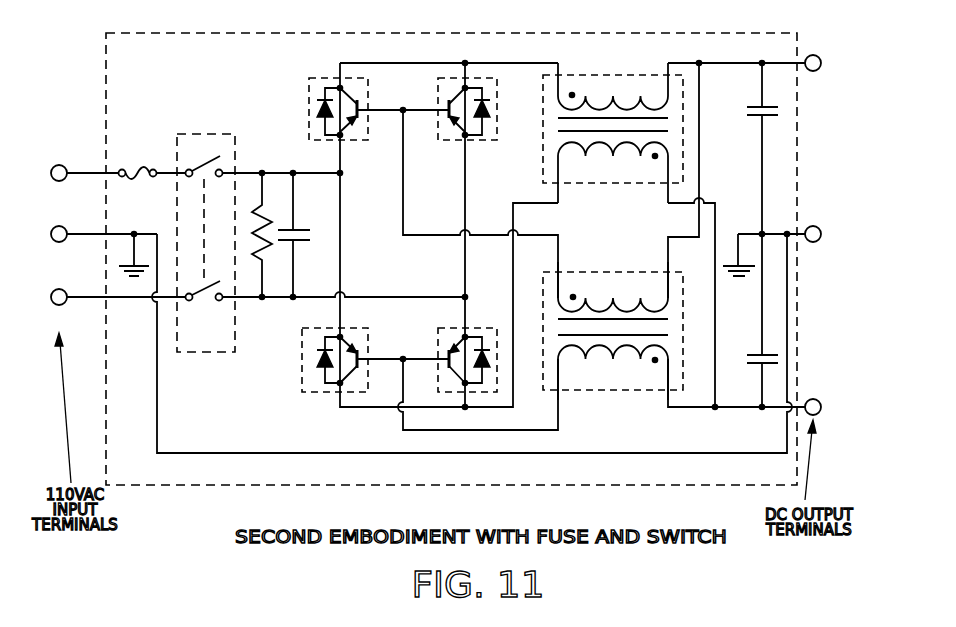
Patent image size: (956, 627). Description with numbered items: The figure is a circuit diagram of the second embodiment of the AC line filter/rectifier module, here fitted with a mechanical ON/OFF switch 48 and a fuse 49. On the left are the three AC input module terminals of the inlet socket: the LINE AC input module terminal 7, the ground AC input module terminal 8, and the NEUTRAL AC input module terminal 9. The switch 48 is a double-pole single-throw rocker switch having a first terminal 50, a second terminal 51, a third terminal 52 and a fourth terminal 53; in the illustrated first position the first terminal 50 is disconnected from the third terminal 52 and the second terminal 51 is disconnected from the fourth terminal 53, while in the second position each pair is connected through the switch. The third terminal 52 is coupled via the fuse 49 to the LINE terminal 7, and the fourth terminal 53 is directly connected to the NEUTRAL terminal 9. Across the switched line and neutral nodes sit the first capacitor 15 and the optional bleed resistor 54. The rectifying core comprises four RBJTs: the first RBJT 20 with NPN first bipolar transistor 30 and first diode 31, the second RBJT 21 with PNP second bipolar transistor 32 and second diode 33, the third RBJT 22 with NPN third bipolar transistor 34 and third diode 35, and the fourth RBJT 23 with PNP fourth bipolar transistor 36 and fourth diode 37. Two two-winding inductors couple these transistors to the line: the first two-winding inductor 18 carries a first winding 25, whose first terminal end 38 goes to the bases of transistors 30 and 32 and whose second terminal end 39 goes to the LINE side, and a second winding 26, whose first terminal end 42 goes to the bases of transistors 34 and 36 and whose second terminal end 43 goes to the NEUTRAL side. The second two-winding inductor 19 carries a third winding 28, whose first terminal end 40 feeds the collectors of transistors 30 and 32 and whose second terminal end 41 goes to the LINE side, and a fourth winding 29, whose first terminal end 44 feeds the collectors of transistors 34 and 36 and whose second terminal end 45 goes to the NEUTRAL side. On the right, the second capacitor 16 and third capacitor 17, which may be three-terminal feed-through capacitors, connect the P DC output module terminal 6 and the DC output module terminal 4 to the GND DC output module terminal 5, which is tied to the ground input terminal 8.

The DC output module terminal 4 is at (813, 399).
The GND DC output module terminal 5 is at (813, 226).
The P DC output module terminal 6 is at (813, 55).
The LINE AC input module terminal 7 is at (52, 168).
The AC input module terminal 8 is at (52, 236).
The NEUTRAL AC input module terminal 9 is at (52, 292).
The first capacitor 15 is at (302, 230).
The second capacitor 16 is at (758, 116).
The third capacitor 17 is at (757, 355).
The first two-winding inductor 18 is at (613, 333).
The second two-winding inductor 19 is at (613, 131).
The first RBJT 20 is at (326, 354).
The second RBJT 21 is at (328, 103).
The third RBJT 22 is at (446, 346).
The fourth RBJT 23 is at (462, 132).
The first winding 25 is at (594, 300).
The second winding 26 is at (580, 352).
The third winding 28 is at (596, 103).
The fourth winding 29 is at (581, 153).
The first bipolar transistor 30 is at (368, 371).
The first diode 31 is at (325, 342).
The second bipolar transistor 32 is at (368, 89).
The second diode 33 is at (317, 101).
The third bipolar transistor 34 is at (440, 372).
The third diode 35 is at (486, 344).
The fourth bipolar transistor 36 is at (440, 98).
The fourth diode 37 is at (485, 101).
The first terminal end of the first winding 38 is at (668, 272).
The second terminal end of the first winding 39 is at (559, 262).
The first terminal end of the third winding 40 is at (668, 75).
The second terminal end of the third winding 41 is at (559, 70).
The first terminal end of the second winding 42 is at (668, 396).
The second terminal end of the second winding 43 is at (559, 396).
The first terminal end of the fourth winding 44 is at (668, 188).
The second terminal end of the fourth winding 45 is at (559, 190).
The mechanical ON/OFF switch 48 is at (206, 228).
The fuse 49 is at (136, 158).
The first terminal 50 is at (219, 178).
The second terminal 51 is at (219, 302).
The third terminal 52 is at (189, 178).
The fourth terminal 53 is at (189, 302).
The bleed resistor 54 is at (266, 216).